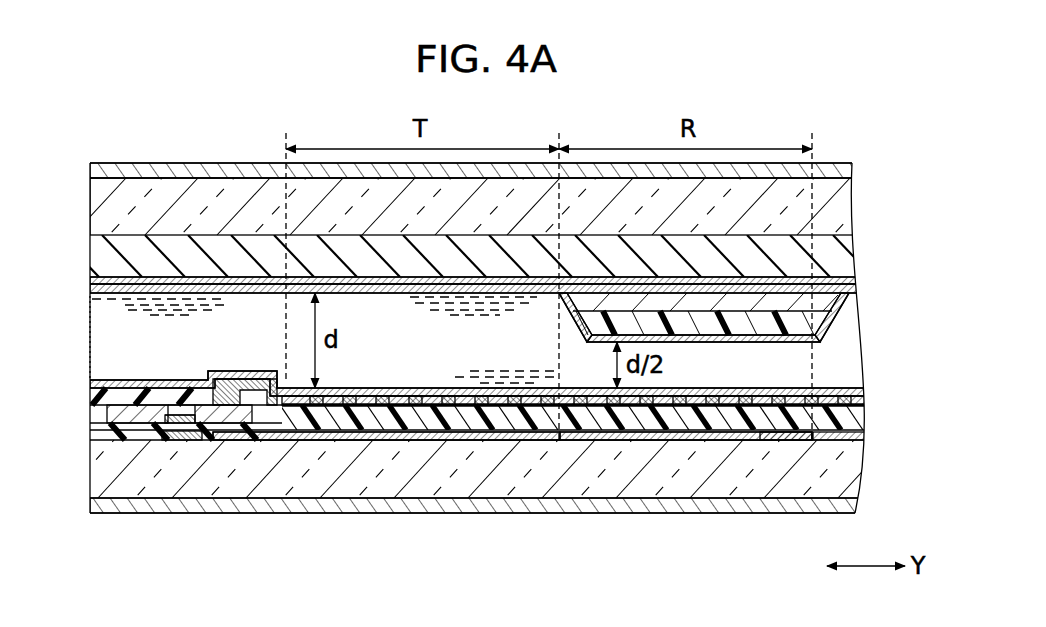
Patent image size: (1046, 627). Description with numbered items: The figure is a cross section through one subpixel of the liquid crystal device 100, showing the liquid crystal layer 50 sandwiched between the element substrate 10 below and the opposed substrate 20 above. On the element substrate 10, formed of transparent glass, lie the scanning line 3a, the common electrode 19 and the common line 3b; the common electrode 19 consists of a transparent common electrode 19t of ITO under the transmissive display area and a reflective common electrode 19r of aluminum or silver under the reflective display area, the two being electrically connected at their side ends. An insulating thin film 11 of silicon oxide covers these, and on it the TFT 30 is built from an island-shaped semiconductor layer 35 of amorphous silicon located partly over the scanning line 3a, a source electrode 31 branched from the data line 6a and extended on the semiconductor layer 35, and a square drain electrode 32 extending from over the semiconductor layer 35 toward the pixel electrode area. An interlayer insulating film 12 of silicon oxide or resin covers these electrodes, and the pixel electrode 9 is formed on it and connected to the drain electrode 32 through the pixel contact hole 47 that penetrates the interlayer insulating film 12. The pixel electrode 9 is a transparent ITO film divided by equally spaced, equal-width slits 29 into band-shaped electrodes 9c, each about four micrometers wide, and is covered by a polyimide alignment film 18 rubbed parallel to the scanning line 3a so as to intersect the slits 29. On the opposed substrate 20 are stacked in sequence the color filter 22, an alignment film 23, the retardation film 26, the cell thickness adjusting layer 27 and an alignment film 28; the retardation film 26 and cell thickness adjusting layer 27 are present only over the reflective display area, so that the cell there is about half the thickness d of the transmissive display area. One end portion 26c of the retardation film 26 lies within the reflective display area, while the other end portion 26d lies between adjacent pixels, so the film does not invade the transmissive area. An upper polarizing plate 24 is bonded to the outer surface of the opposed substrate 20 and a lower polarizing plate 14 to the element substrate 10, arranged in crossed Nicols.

The liquid crystal device 100 is at (838, 121).
The upper polarizing plate 24 is at (852, 170).
The opposed substrate 20 is at (840, 208).
The color filter 22 is at (848, 256).
The alignment film 23 is at (848, 281).
The alignment film 28 is at (850, 290).
The retardation film 26 is at (770, 300).
The end portion 26c is at (567, 310).
The other end portion 26d is at (840, 320).
The cell thickness adjusting layer 27 is at (695, 322).
The liquid crystal layer 50 is at (847, 350).
The alignment film 18 is at (860, 391).
The pixel electrode 9 is at (862, 400).
The band-shaped electrode 9c is at (395, 398).
The slit 29 is at (445, 398).
The interlayer insulating film 12 is at (862, 418).
The insulating thin film 11 is at (858, 437).
The element substrate 10 is at (848, 467).
The lower polarizing plate 14 is at (855, 503).
The common electrode 19 is at (537, 447).
The transparent common electrode 19t is at (392, 441).
The reflective common electrode 19r is at (655, 441).
The common line 3b is at (812, 441).
The TFT 30 is at (158, 452).
The scanning line 3a is at (185, 444).
The data line 6a is at (122, 406).
The source electrode 31 is at (158, 406).
The drain electrode 32 is at (182, 416).
The semiconductor layer 35 is at (196, 406).
The pixel contact hole 47 is at (233, 381).